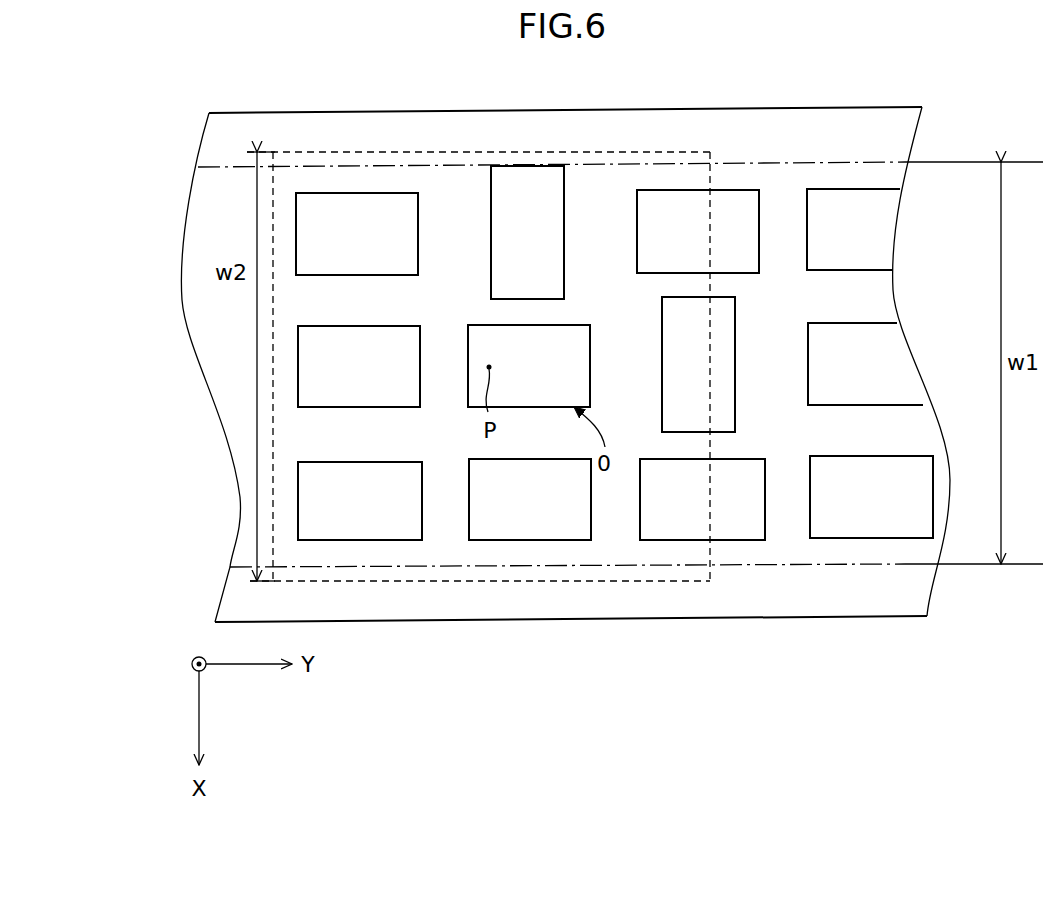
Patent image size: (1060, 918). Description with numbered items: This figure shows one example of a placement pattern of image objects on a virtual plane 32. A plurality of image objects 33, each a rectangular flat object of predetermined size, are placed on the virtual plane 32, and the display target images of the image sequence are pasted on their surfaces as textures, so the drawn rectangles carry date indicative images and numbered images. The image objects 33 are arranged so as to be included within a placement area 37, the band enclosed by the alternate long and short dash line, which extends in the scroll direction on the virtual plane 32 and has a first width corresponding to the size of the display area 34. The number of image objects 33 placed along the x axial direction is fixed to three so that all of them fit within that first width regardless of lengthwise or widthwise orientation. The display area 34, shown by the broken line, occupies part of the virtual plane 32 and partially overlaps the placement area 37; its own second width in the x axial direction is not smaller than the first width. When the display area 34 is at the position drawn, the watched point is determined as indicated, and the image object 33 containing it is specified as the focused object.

The virtual plane 32 is at (913, 616).
The image object 33 is at (400, 540).
The display area 34 is at (680, 582).
The placement area 37 is at (927, 564).